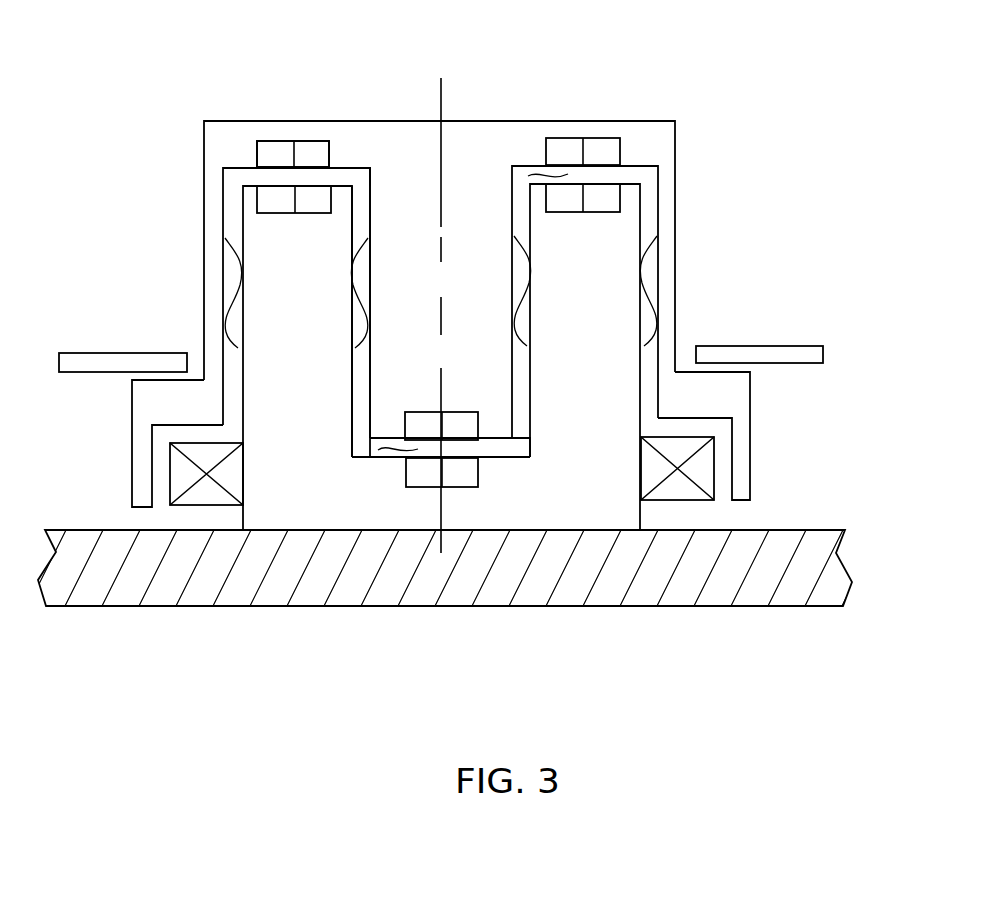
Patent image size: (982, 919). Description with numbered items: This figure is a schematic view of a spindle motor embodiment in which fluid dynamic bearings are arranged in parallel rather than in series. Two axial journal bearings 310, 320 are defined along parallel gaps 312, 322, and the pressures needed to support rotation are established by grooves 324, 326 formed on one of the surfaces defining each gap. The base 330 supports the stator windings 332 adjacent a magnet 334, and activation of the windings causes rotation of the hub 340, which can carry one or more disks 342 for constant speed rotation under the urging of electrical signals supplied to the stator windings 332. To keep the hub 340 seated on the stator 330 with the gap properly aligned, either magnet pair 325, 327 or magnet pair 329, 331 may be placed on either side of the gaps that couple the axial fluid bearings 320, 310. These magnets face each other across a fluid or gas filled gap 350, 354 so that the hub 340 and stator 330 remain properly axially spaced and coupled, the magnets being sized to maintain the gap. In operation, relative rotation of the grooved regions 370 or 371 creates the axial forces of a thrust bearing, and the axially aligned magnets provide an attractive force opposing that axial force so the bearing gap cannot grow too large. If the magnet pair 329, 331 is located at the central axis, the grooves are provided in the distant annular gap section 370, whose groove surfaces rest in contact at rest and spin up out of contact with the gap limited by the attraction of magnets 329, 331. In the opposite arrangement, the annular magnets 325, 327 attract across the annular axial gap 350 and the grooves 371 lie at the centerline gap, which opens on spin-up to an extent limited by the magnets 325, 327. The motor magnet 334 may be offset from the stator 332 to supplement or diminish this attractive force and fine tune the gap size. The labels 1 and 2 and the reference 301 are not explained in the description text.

The first gap 1 is at (363, 160).
The second gap 2 is at (527, 447).
The base 301 is at (597, 576).
The axial journal bearing 310 is at (369, 272).
The gap 312 is at (365, 215).
The axial journal bearing 320 is at (223, 277).
The gap 322 is at (231, 201).
The grooves 324 is at (352, 284).
The magnet 325 is at (312, 143).
The grooves 326 is at (242, 262).
The magnet 327 is at (352, 193).
The magnet 329 is at (371, 458).
The base 330 is at (568, 506).
The magnet 331 is at (418, 488).
The stator windings 332 is at (674, 503).
The magnet 334 is at (748, 456).
The hub 340 is at (667, 263).
The disk 342 is at (743, 353).
The annular axial gap 350 is at (291, 178).
The gap 354 is at (420, 413).
The grooved region 370 is at (534, 176).
The grooved region 371 is at (384, 455).